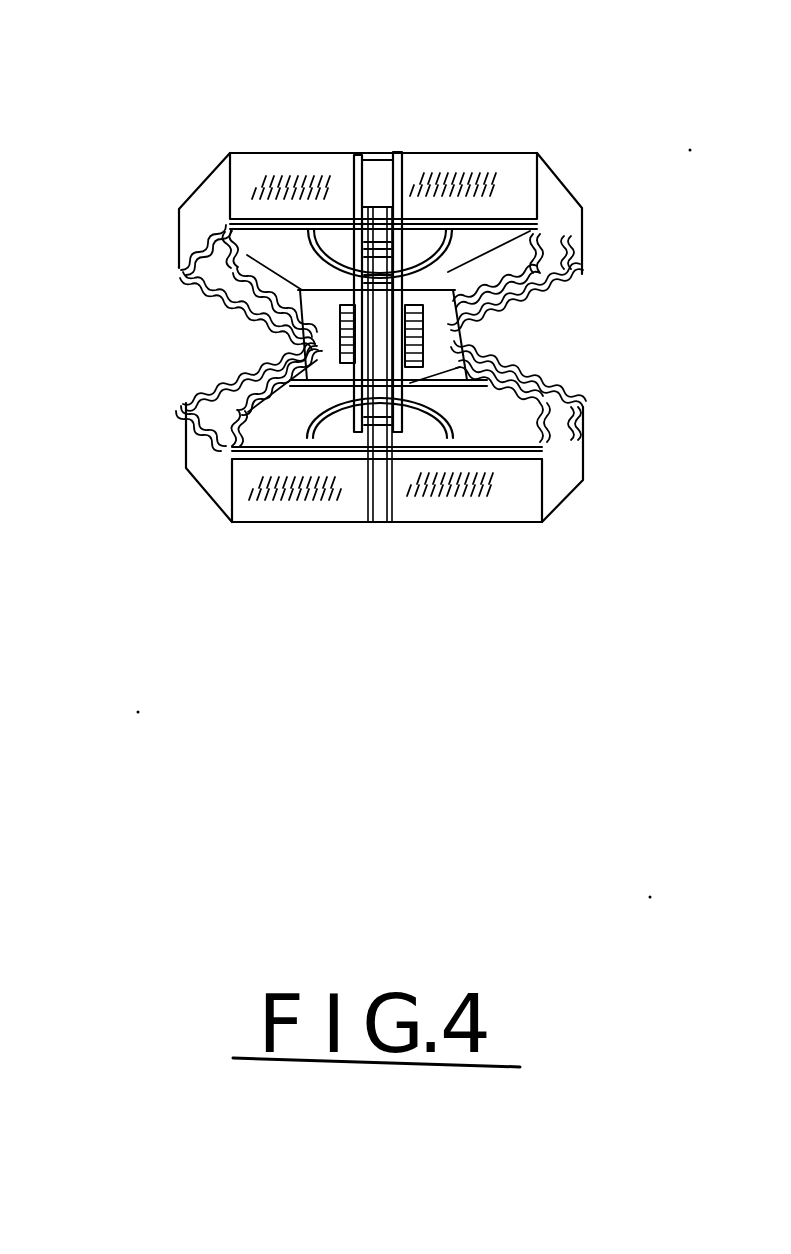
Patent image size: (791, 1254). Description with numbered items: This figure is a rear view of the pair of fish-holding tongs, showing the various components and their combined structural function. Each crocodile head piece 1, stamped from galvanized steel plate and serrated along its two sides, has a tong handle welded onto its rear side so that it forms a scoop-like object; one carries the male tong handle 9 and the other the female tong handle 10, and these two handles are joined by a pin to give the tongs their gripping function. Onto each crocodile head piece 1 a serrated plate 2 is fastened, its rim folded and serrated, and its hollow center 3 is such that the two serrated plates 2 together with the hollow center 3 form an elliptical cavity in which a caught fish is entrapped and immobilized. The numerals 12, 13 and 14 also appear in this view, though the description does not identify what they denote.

The crocodile head piece 1 is at (360, 327).
The serrated plate 2 is at (437, 370).
The hollow center 3 is at (365, 334).
The male tong handle 9 is at (433, 560).
The female tong handle 10 is at (370, 261).
The left spacer block 12 is at (189, 311).
The center frame 13 is at (498, 375).
The right spacer block 14 is at (543, 352).